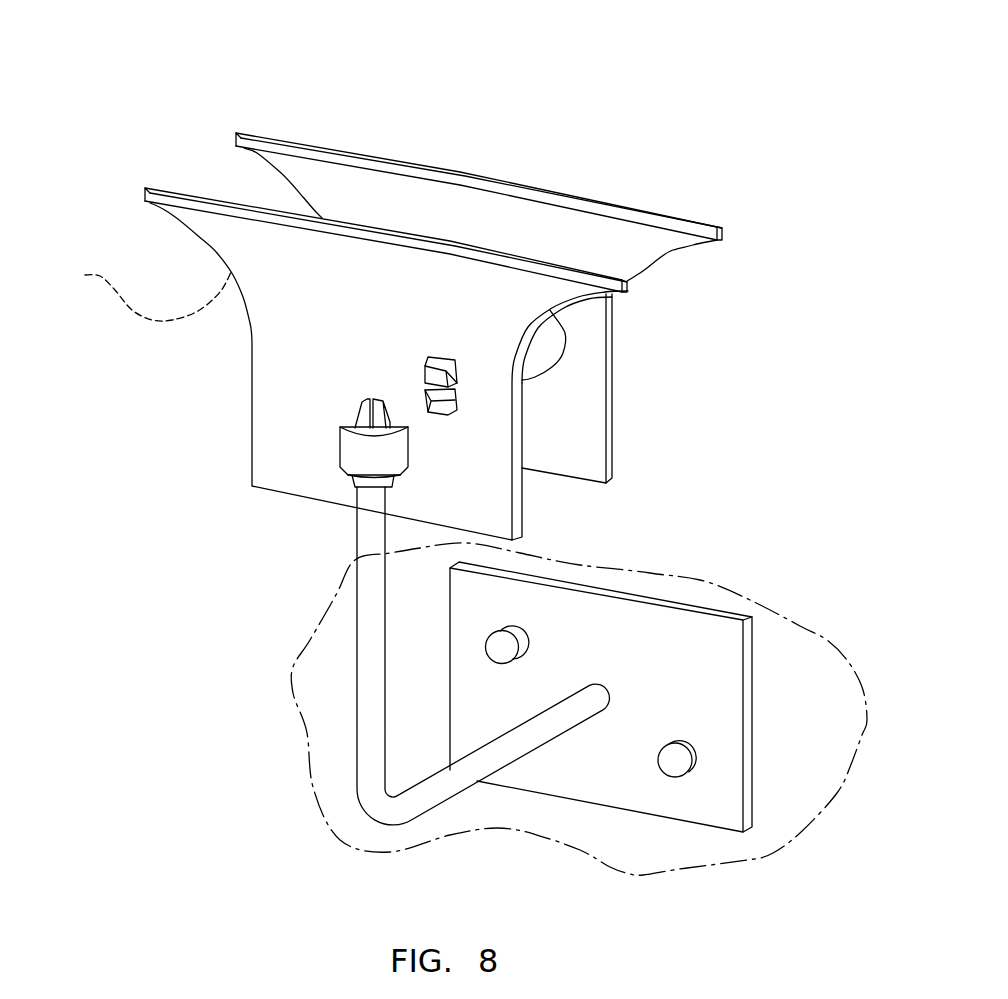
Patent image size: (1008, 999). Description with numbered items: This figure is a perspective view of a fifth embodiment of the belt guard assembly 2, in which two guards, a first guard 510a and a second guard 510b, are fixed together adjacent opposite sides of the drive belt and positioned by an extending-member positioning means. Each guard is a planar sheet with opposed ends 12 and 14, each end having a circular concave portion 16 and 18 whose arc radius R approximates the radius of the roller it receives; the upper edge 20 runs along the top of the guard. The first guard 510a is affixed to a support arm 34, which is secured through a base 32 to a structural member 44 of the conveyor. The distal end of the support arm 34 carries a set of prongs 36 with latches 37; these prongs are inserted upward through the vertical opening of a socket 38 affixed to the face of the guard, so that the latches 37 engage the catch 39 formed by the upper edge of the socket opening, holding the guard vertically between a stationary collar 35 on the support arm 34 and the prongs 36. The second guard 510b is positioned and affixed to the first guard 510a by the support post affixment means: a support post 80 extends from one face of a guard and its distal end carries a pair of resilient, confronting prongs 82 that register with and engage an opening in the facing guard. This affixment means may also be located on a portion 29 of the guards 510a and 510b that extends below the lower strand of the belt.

The belt guard assembly 2 is at (622, 67).
The guard end 12 is at (200, 190).
The guard end 14 is at (678, 222).
The concave portion 16 is at (139, 291).
The concave portion 18 is at (613, 328).
The upper edge 20 is at (401, 162).
The portion of the guards 29 is at (294, 463).
The base 32 is at (698, 686).
The support arm 34 is at (372, 637).
The stationary collar 35 is at (372, 483).
The prongs 36 is at (358, 408).
The latches 37 is at (398, 430).
The socket 38 is at (370, 453).
The catch 39 is at (340, 439).
The structural member 44 is at (821, 731).
The support post 80 is at (545, 347).
The prongs 82 is at (437, 359).
The arc radius R is at (659, 256).
The first guard 510a is at (323, 289).
The second guard 510b is at (401, 212).